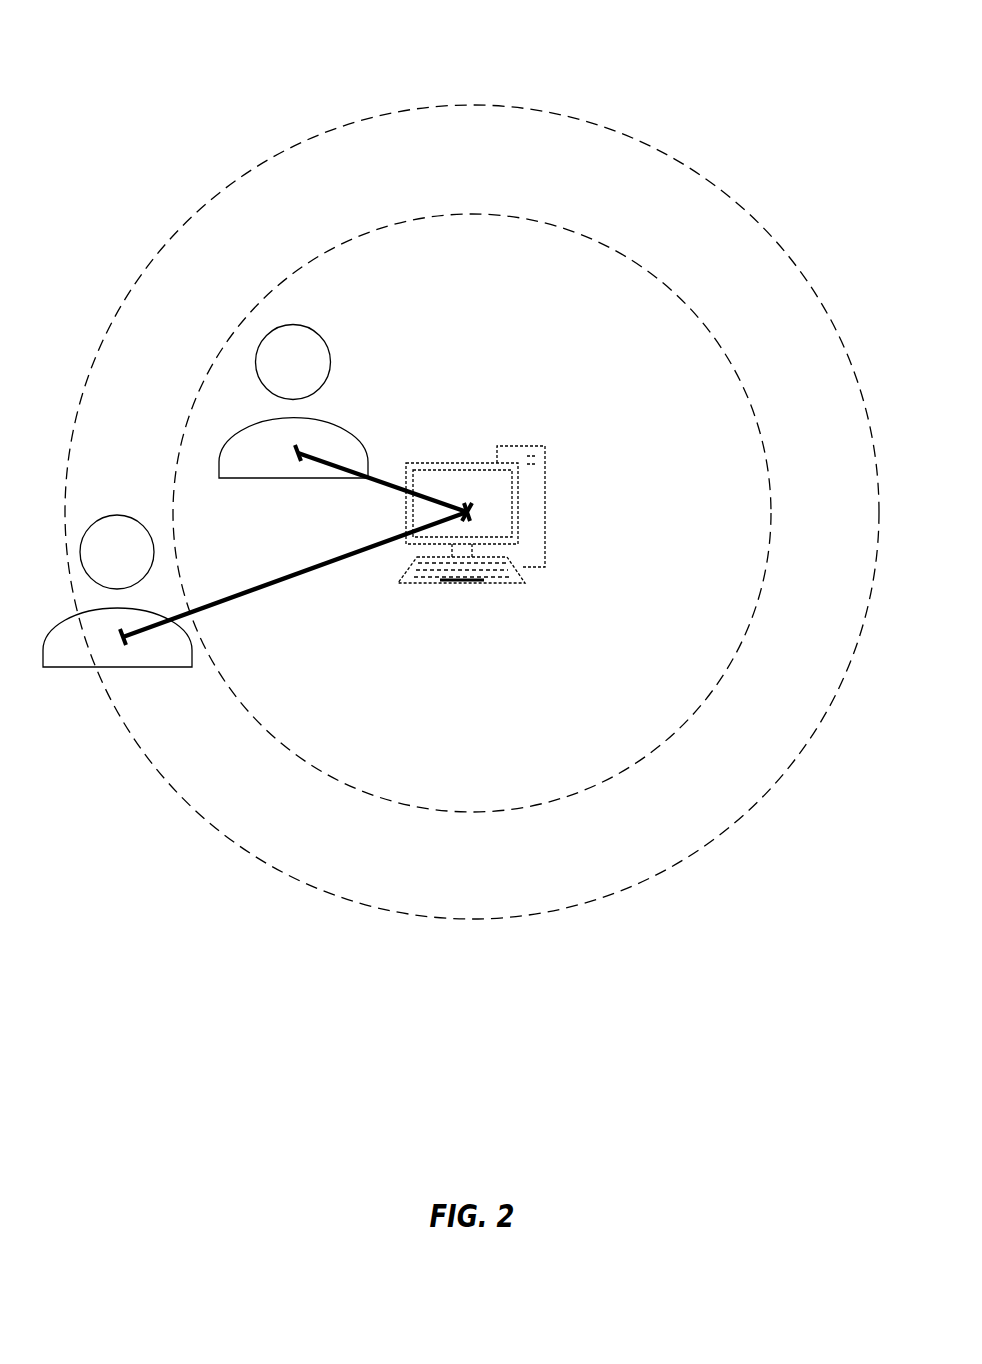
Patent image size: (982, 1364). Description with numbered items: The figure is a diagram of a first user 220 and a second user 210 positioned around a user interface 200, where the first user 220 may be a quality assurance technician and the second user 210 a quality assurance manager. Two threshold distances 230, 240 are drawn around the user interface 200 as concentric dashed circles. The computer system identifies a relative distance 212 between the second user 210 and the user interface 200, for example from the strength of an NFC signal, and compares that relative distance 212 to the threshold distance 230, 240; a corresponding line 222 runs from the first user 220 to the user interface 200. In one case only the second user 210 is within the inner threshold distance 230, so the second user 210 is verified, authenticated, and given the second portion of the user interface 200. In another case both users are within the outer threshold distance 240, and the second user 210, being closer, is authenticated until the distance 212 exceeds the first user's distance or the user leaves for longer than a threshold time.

The user interface 200 is at (508, 513).
The second user 210 is at (303, 368).
The relative distance 212 is at (367, 477).
The first user 220 is at (98, 508).
The gaze direction of second user 222 is at (207, 610).
The threshold distance 230 is at (597, 245).
The threshold distance 240 is at (420, 108).